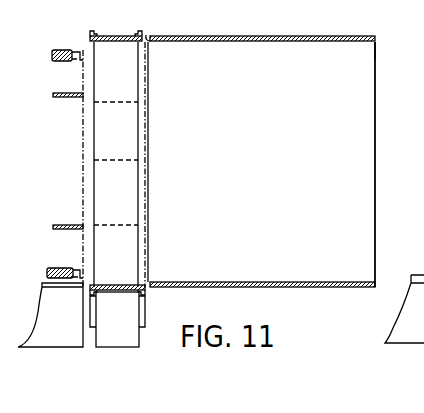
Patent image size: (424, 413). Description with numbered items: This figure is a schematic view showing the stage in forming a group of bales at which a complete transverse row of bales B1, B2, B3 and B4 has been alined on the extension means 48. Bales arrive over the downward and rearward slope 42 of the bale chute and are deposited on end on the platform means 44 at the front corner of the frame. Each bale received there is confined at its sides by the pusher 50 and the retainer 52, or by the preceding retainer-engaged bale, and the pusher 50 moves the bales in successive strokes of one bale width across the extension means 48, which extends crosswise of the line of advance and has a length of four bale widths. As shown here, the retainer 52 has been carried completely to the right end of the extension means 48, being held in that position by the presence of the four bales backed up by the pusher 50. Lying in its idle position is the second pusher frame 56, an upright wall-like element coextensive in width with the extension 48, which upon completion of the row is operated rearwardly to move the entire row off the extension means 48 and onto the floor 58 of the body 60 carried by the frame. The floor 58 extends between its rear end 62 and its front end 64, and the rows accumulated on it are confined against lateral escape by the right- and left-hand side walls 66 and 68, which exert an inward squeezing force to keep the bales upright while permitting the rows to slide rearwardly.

The downward and rearward slope of the bale chute 42 is at (67, 340).
The platform means 44 is at (118, 343).
The extension means 48 is at (83, 136).
The pusher 50 is at (127, 286).
The retainer 52 is at (116, 36).
The second pusher frame 56 is at (83, 179).
The floor 58 is at (279, 185).
The body 60 is at (376, 40).
The rear end 62 is at (375, 135).
The front end 64 is at (142, 159).
The right-hand side wall 66 is at (290, 34).
The left-hand side wall 68 is at (292, 288).
The first bale B1 is at (140, 67).
The second bale B2 is at (140, 131).
The third bale B3 is at (140, 196).
The fourth bale B4 is at (140, 243).